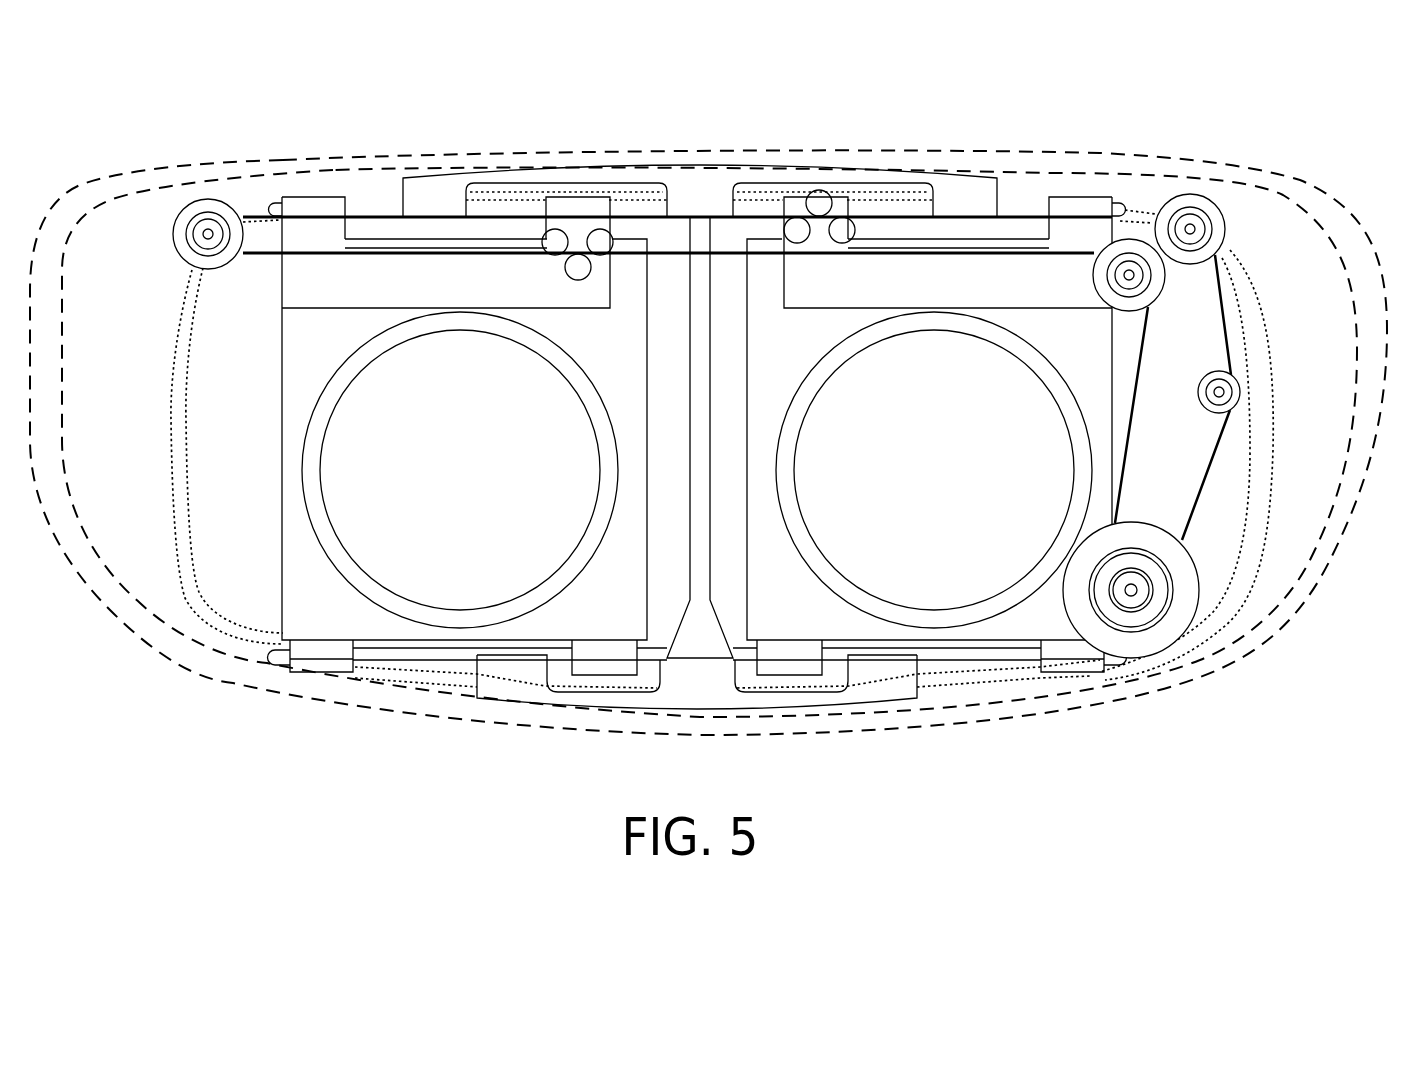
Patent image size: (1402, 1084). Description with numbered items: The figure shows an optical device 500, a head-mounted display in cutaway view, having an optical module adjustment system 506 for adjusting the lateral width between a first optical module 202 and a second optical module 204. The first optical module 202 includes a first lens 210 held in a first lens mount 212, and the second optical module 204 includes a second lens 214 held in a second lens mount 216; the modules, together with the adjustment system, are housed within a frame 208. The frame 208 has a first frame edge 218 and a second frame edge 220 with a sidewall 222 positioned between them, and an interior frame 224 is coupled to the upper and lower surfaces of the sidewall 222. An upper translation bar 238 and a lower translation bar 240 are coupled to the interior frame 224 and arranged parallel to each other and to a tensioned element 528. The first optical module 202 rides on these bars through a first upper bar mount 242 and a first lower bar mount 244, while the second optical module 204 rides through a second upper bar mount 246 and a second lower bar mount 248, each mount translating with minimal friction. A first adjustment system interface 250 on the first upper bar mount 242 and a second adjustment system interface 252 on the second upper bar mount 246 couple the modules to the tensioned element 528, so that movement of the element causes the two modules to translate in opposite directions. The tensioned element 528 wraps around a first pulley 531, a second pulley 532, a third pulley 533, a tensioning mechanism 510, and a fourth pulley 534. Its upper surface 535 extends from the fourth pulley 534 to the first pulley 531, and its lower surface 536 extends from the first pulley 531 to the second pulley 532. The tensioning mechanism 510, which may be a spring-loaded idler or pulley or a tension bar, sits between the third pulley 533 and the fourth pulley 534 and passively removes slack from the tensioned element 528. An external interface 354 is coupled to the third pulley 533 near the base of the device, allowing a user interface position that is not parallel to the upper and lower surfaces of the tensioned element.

The optical device 500 is at (985, 63).
The frame 208 is at (107, 148).
The first frame edge 218 is at (73, 518).
The optical module adjustment system 506 is at (1205, 143).
The sidewall 222 is at (87, 383).
The second frame edge 220 is at (170, 440).
The upper translation bar 238 is at (1020, 212).
The upper surface 535 is at (425, 213).
The interior frame 224 is at (682, 203).
The first optical module 202 is at (266, 451).
The second optical module 204 is at (1122, 375).
The first upper bar mount 242 is at (298, 298).
The second upper bar mount 246 is at (1054, 298).
The lower surface 536 is at (490, 258).
The first adjustment system interface 250 is at (556, 262).
The second adjustment system interface 252 is at (818, 238).
The first lens 210 is at (437, 490).
The second lens 214 is at (922, 490).
The first lens mount 212 is at (591, 623).
The second lens mount 216 is at (1022, 638).
The first lower bar mount 244 is at (313, 636).
The second lower bar mount 248 is at (776, 648).
The lower translation bar 240 is at (432, 658).
The tensioned element 528 is at (268, 264).
The first pulley 531 is at (173, 227).
The fourth pulley 534 is at (1225, 210).
The second pulley 532 is at (1165, 282).
The tensioning mechanism 510 is at (1240, 393).
The third pulley 533 is at (1187, 553).
The external interface 354 is at (1170, 653).